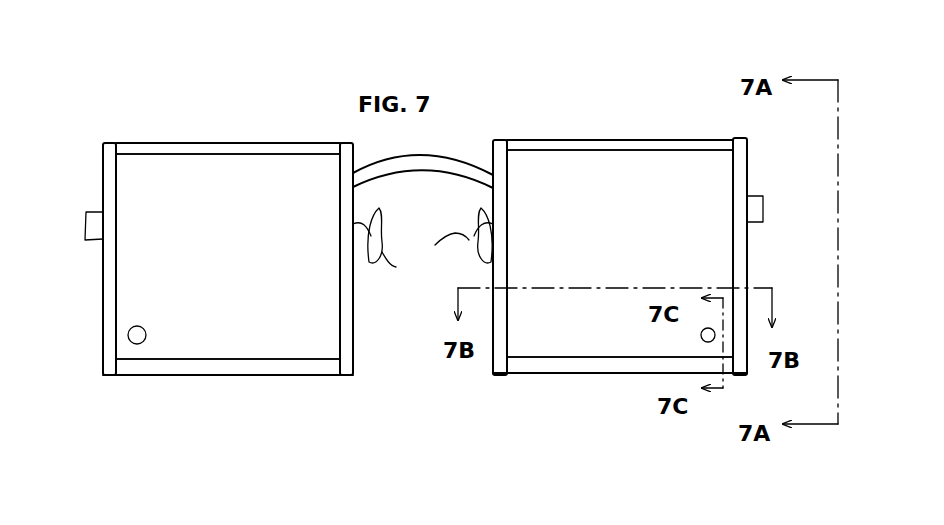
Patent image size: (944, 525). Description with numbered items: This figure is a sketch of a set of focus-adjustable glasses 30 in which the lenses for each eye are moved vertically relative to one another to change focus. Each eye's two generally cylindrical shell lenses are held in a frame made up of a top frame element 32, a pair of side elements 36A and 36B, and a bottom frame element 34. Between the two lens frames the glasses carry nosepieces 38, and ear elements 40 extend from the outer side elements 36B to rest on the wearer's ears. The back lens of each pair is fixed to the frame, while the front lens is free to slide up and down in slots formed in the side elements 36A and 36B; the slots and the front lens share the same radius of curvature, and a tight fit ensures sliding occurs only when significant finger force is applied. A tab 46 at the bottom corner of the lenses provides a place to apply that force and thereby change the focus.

The eyewear / protective eyeglasses 30 is at (572, 78).
The top frame element 32 is at (228, 143).
The bottom frame element 34 is at (300, 377).
The side element 36A is at (353, 318).
The side element 36B is at (103, 318).
The nosepiece 38 is at (423, 226).
The ear element 40 is at (97, 212).
The tab 46 is at (140, 344).